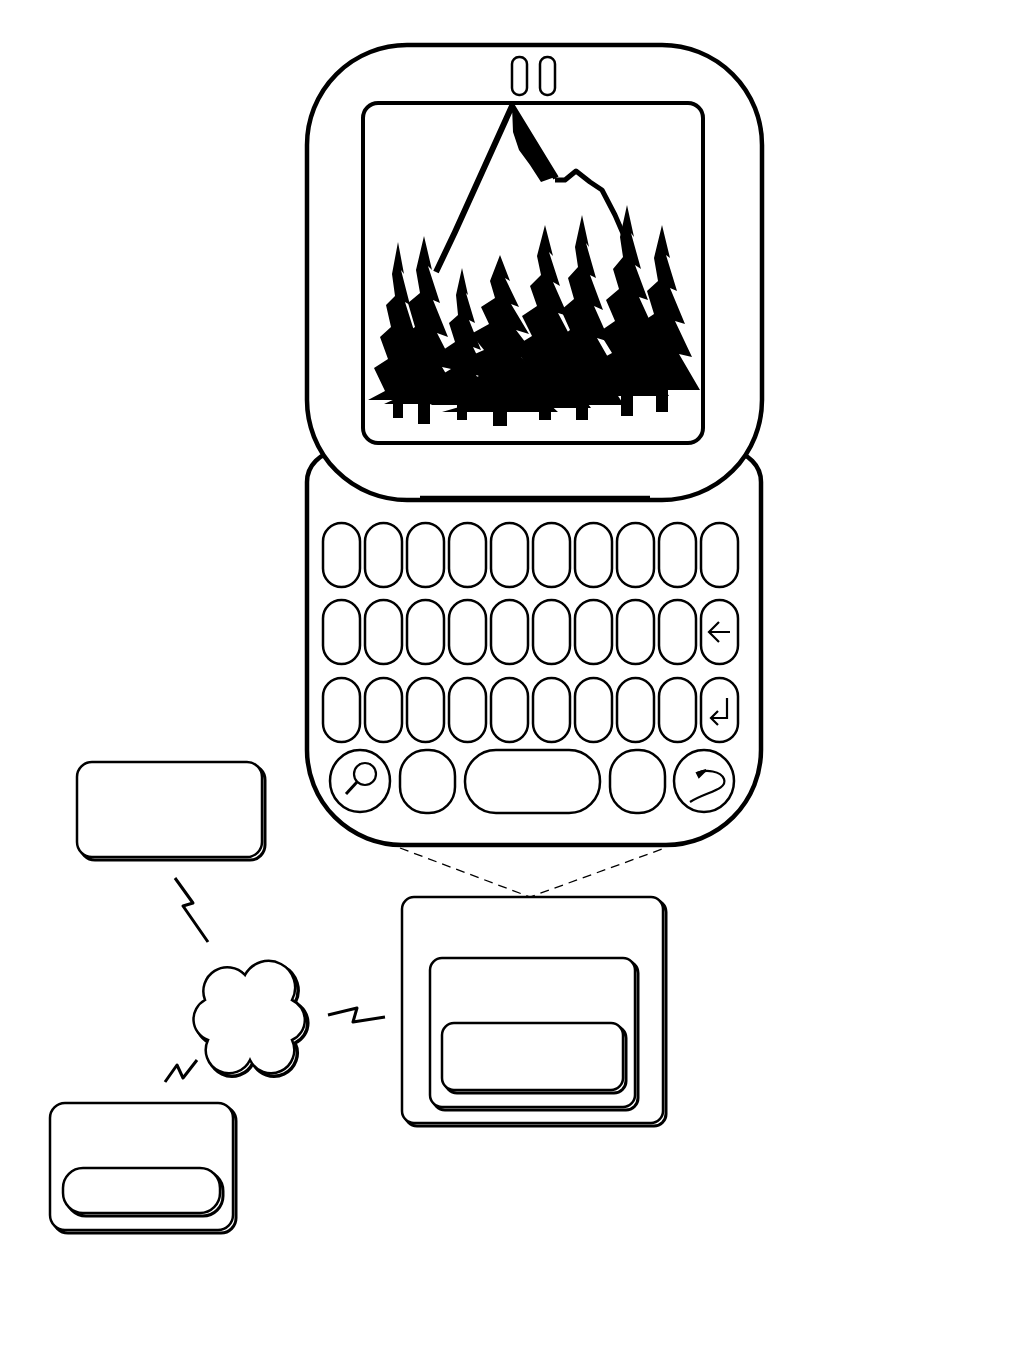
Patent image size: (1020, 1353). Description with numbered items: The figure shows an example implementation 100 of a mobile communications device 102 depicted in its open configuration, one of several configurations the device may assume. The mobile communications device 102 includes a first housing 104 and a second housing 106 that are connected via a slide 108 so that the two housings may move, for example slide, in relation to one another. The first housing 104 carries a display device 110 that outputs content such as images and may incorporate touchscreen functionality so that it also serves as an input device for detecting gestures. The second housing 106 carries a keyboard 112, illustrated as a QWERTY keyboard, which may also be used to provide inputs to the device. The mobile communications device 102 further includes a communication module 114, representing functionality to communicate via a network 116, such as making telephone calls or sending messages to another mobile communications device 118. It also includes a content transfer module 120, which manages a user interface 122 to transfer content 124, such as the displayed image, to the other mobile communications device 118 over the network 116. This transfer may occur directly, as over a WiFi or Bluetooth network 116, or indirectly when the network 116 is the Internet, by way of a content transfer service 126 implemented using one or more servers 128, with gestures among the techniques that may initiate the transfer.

The example implementation 100 is at (151, 44).
The mobile communications device 102 is at (449, 639).
The first housing 104 is at (322, 98).
The second housing 106 is at (315, 502).
The slide 108 is at (743, 458).
The display device 110 is at (362, 272).
The keyboard 112 is at (778, 509).
The communication module 114 is at (534, 1034).
The network 116 is at (275, 980).
The mobile communications device 118 is at (171, 811).
The content transfer module 120 is at (534, 1058).
The user interface 122 is at (452, 112).
The content 124 is at (599, 188).
The content transfer service 126 is at (143, 1168).
The server 128 is at (143, 1192).